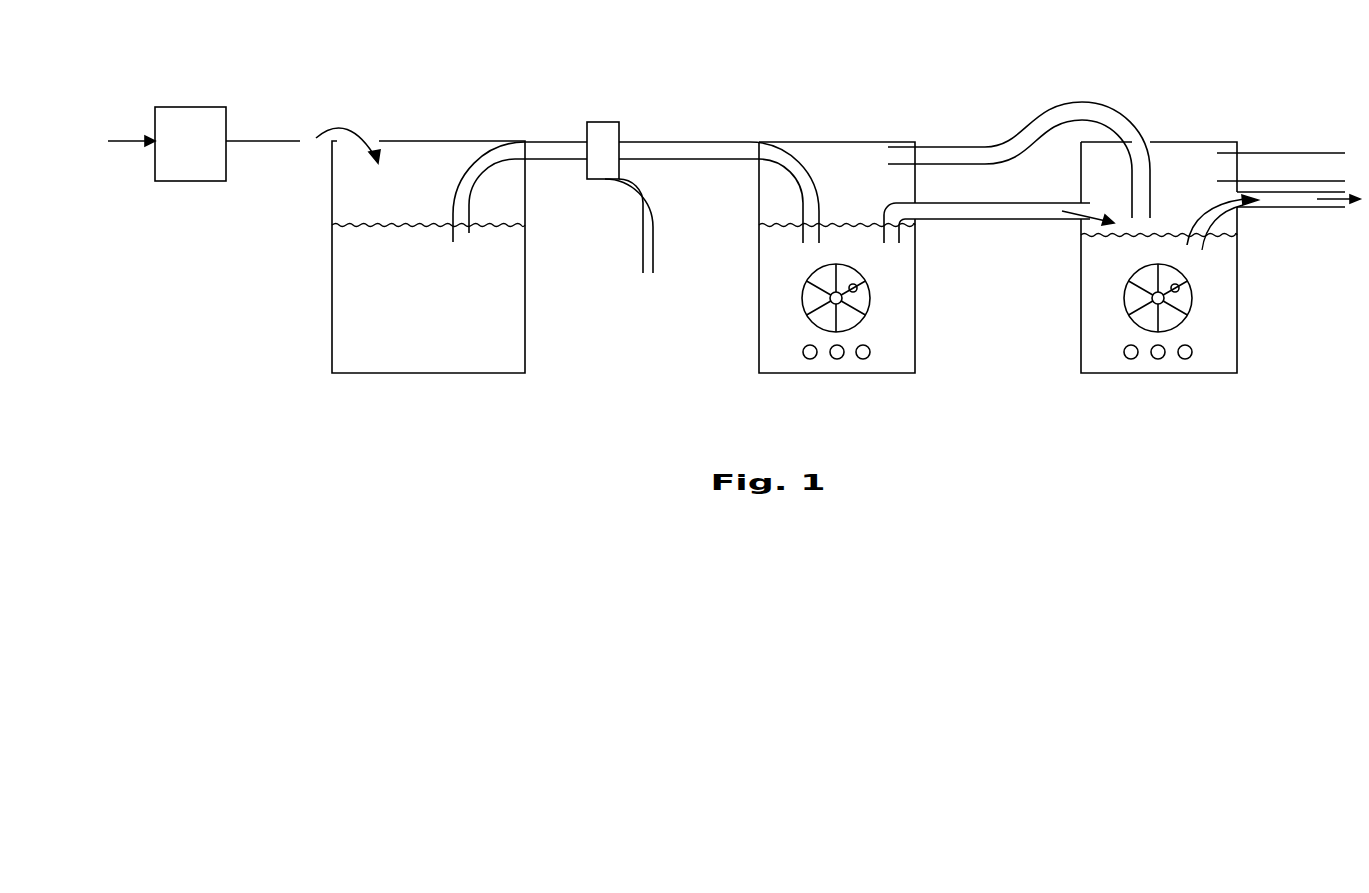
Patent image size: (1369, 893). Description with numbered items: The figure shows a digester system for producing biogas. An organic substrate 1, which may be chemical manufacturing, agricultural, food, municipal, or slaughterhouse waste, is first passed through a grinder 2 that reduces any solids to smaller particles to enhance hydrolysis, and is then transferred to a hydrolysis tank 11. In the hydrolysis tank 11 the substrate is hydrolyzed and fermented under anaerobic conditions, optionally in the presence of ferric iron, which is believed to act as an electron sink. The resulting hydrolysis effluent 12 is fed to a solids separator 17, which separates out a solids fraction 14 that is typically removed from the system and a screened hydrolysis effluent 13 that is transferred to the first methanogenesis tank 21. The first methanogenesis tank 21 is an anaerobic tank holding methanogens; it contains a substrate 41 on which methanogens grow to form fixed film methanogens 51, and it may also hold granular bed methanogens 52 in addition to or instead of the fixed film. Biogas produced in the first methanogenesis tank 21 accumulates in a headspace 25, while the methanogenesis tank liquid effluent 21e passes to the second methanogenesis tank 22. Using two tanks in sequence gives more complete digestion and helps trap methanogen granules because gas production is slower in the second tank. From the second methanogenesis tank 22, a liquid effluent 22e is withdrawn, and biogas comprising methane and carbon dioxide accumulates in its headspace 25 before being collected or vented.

The organic substrate 1 is at (236, 145).
The grinder 2 is at (192, 168).
The hydrolysis tank 11 is at (383, 325).
The hydrolysis effluent 12 is at (551, 160).
The screened hydrolysis effluent 13 is at (673, 150).
The solids fraction 14 is at (651, 238).
The solids separator 17 is at (597, 172).
The first methanogenesis tank 21 is at (822, 374).
The methanogenesis tank liquid effluent 21e is at (896, 206).
The second methanogenesis tank 22 is at (1143, 374).
The liquid effluent 22e is at (1286, 205).
The headspace 25 is at (851, 192).
The substrate 41 is at (803, 304).
The fixed film methanogens 51 is at (857, 288).
The granular bed methanogens 52 is at (870, 352).